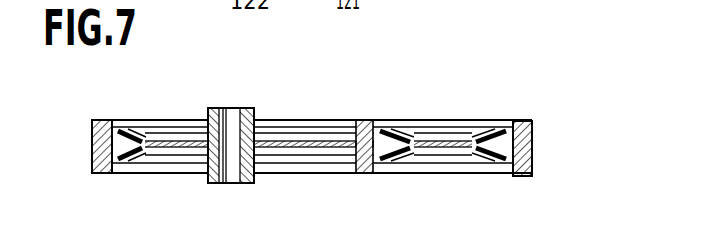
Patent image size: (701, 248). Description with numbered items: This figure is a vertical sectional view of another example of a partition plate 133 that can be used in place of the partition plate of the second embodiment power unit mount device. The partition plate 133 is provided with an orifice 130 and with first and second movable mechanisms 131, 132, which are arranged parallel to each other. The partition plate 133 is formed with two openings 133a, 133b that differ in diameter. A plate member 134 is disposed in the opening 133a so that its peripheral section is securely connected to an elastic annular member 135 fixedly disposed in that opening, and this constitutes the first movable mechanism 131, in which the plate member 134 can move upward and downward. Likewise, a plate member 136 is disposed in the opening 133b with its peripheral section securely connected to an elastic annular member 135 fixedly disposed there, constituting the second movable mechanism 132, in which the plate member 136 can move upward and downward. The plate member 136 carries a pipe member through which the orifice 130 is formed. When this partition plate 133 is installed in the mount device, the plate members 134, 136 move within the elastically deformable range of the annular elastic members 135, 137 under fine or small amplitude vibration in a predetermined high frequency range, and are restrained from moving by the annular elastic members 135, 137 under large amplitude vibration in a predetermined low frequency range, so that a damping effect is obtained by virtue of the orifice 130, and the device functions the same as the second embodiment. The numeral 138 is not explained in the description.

The orifice 130 is at (233, 108).
The first movable mechanism 131 is at (414, 110).
The second movable mechanism 132 is at (299, 110).
The partition plate 133 is at (545, 144).
The opening 133a is at (508, 123).
The opening 133b is at (121, 119).
The plate member 134 is at (445, 150).
The elastic annular member 135 is at (503, 168).
The plate member 136 is at (288, 150).
The annular elastic member 137 is at (343, 164).
The hub bore 138 is at (203, 185).